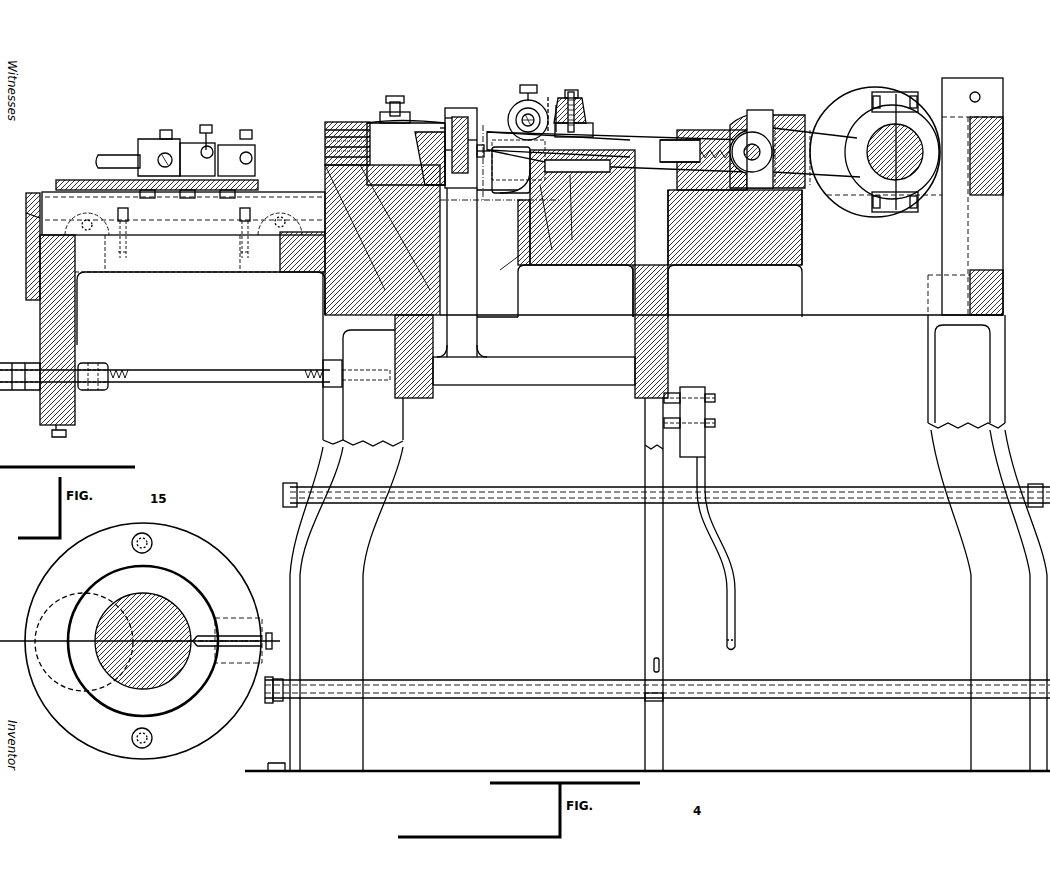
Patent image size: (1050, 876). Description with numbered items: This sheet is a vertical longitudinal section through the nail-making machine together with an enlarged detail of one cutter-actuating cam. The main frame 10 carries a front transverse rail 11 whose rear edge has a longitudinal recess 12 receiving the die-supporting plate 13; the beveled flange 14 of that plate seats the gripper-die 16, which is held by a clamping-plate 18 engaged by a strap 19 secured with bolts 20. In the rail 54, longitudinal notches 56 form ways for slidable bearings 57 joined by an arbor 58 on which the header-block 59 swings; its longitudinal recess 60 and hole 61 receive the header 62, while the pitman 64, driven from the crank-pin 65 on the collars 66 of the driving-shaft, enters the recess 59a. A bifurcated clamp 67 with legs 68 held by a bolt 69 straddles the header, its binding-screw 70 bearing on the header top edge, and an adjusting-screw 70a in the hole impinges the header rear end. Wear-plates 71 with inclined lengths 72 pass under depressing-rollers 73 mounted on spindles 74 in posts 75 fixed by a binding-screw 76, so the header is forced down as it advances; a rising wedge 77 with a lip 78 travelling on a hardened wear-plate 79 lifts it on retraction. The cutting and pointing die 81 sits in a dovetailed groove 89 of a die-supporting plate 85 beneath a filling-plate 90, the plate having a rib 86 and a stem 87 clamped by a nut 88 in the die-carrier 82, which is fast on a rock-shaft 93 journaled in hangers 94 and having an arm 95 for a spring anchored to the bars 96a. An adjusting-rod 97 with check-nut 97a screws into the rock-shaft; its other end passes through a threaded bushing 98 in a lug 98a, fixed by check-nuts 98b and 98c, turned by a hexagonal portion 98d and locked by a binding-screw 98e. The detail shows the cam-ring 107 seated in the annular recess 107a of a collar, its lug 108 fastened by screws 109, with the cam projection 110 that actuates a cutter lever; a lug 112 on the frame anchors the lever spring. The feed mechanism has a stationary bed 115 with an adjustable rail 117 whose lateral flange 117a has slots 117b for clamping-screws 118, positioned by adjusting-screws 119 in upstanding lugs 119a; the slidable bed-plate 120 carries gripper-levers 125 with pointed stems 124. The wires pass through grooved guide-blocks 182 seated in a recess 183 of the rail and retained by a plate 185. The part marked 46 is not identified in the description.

In FIG. 4, the main frame 10 is at (760, 318).
In FIG. 4, the front transverse rail 11 is at (325, 180).
In FIG. 4, the longitudinal recess 12 is at (323, 285).
In FIG. 4, the die-supporting plate 13 is at (325, 308).
In FIG. 4, the flange 14 is at (455, 200).
In FIG. 4, the gripper-die 16 is at (437, 128).
In FIG. 15, the gripper-die 16 is at (25, 637).
In FIG. 4, the clamping-plate 18 is at (420, 123).
In FIG. 4, the strap 19 is at (405, 112).
In FIG. 4, the bolts 20 is at (393, 96).
In FIG. 4, the shaft 46 is at (888, 124).
In FIG. 15, the shaft 46 is at (125, 688).
In FIG. 4, the rail 54 is at (500, 205).
In FIG. 4, the longitudinal notches 56 is at (714, 255).
In FIG. 4, the horizontally-slidable bearings 57 is at (745, 123).
In FIG. 4, the transverse pivotal spindle or arbor 58 is at (755, 148).
In FIG. 4, the header-block 59 is at (588, 222).
In FIG. 4, the opening or recess 59a is at (755, 120).
In FIG. 4, the longitudinal recess 60 is at (615, 272).
In FIG. 4, the hole 61 is at (674, 270).
In FIG. 4, the header 62 is at (606, 142).
In FIG. 4, the pitman 64 is at (812, 128).
In FIG. 4, the crank-pin 65 is at (908, 200).
In FIG. 15, the crank-pin 65 is at (55, 610).
In FIG. 4, the collars 66 is at (845, 205).
In FIG. 4, the bifurcated clamp 67 is at (590, 123).
In FIG. 4, the legs 68 is at (565, 232).
In FIG. 4, the transverse bolt 69 is at (538, 250).
In FIG. 4, the binding-screw 70 is at (574, 92).
In FIG. 4, the adjusting-screw 70a is at (700, 130).
In FIG. 4, the wear-plates 71 is at (572, 133).
In FIG. 4, the inclined length 72 is at (556, 105).
In FIG. 4, the depressing-rollers 73 is at (520, 102).
In FIG. 4, the horizontal spindles 74 is at (549, 97).
In FIG. 4, the vertical posts 75 is at (526, 166).
In FIG. 4, the binding-screw 76 is at (528, 85).
In FIG. 4, the rising wedge 77 is at (530, 262).
In FIG. 4, the depending inclined lip 78 is at (524, 250).
In FIG. 4, the hardened wear-plate 79 is at (524, 190).
In FIG. 4, the cutting and pointing die 81 is at (465, 125).
In FIG. 4, the die-carriers 82 is at (478, 331).
In FIG. 4, the die-supporting plate 85 is at (477, 150).
In FIG. 4, the rib 86 is at (472, 140).
In FIG. 4, the stem 87 is at (482, 145).
In FIG. 4, the nut 88 is at (486, 170).
In FIG. 4, the dovetailed groove 89 is at (455, 140).
In FIG. 4, the filling-plate 90 is at (458, 118).
In FIG. 4, the horizontal rock-shafts 93 is at (522, 385).
In FIG. 4, the hangers 94 is at (433, 400).
In FIG. 4, the downwardly-extending arms 95 is at (735, 560).
In FIG. 4, the bars 96a is at (645, 574).
In FIG. 4, the adjusting-rod 97 is at (217, 383).
In FIG. 4, the check-nut 97a is at (325, 382).
In FIG. 4, the externally-threaded bushing 98 is at (85, 362).
In FIG. 4, the lug 98a is at (76, 318).
In FIG. 4, the check-nut 98b is at (108, 370).
In FIG. 4, the check-nut 98c is at (15, 362).
In FIG. 4, the squared or hexagonal portion 98d is at (20, 390).
In FIG. 4, the binding-screw 98e is at (66, 435).
In FIG. 15, the cam-ring 107 is at (63, 713).
In FIG. 15, the annular recess 107a is at (160, 716).
In FIG. 15, the lug or projection 108 is at (230, 625).
In FIG. 15, the bolts or screws 109 is at (208, 636).
In FIG. 15, the cam projection 110 is at (237, 655).
In FIG. 4, the lug 112 is at (975, 78).
In FIG. 4, the stationary bed 115 is at (215, 272).
In FIG. 4, the rail 117 is at (38, 193).
In FIG. 4, the lateral flange 117a is at (26, 236).
In FIG. 4, the slots 117b is at (128, 230).
In FIG. 4, the clamping-screws 118 is at (110, 258).
In FIG. 4, the transverse adjusting-screws 119 is at (295, 188).
In FIG. 4, the upstanding lugs 119a is at (105, 280).
In FIG. 4, the slidable bed-plate 120 is at (66, 180).
In FIG. 4, the pointed stem 124 is at (163, 152).
In FIG. 4, the lever 125 is at (110, 155).
In FIG. 4, the grooved guide-blocks 182 is at (325, 140).
In FIG. 4, the recess 183 is at (305, 272).
In FIG. 4, the plate 185 is at (345, 122).